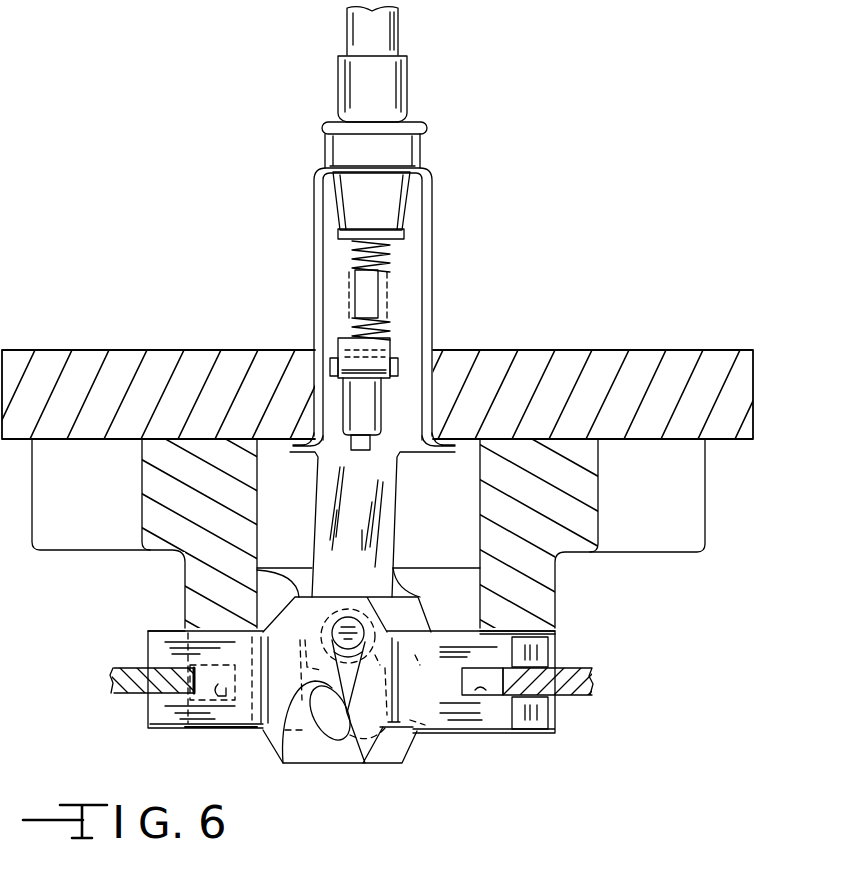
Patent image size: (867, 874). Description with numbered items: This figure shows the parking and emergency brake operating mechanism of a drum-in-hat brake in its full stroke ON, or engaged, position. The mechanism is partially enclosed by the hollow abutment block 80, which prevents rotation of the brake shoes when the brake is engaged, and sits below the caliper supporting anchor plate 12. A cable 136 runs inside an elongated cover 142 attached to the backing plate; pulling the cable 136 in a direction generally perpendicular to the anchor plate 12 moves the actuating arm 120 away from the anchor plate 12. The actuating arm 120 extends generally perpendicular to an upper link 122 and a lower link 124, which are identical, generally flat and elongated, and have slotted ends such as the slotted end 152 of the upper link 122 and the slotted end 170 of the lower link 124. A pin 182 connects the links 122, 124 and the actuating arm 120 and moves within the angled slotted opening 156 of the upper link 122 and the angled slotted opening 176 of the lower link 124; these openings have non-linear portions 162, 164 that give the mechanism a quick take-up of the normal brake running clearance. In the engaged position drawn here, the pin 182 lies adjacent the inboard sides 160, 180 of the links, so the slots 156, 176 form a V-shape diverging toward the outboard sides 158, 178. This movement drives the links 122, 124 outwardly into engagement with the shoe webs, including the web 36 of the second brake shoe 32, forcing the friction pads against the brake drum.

The anchor plate 12 is at (608, 350).
The second brake shoe 32 is at (127, 667).
The web 36 is at (592, 670).
The abutment block 80 is at (556, 620).
The actuating arm 120 is at (440, 455).
The upper link 122 is at (157, 728).
The lower link 124 is at (530, 737).
The cable 136 is at (380, 292).
The cover 142 is at (434, 203).
The slotted end 152 is at (480, 683).
The angled slotted opening 156 is at (285, 763).
The outboard side 158 is at (317, 762).
The inboard side 160 is at (262, 575).
The non-linear portion 162 is at (360, 762).
The non-linear portion 164 is at (425, 737).
The slotted end 170 is at (220, 713).
The angled slotted opening 176 is at (399, 674).
The outboard side 178 is at (400, 763).
The inboard side 180 is at (400, 563).
The pin 182 is at (368, 631).